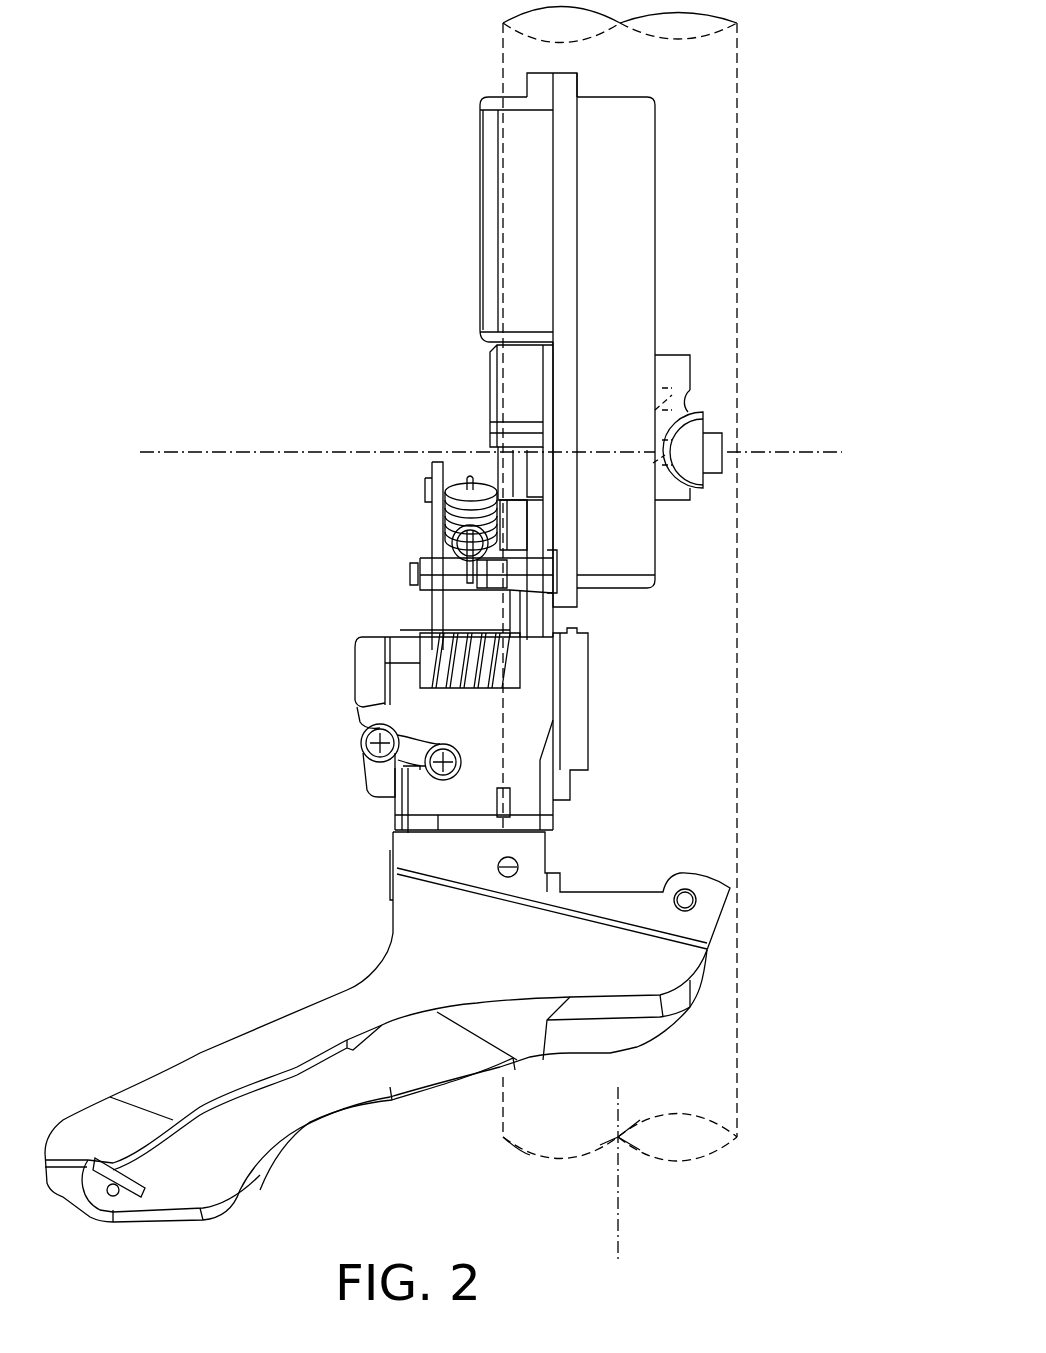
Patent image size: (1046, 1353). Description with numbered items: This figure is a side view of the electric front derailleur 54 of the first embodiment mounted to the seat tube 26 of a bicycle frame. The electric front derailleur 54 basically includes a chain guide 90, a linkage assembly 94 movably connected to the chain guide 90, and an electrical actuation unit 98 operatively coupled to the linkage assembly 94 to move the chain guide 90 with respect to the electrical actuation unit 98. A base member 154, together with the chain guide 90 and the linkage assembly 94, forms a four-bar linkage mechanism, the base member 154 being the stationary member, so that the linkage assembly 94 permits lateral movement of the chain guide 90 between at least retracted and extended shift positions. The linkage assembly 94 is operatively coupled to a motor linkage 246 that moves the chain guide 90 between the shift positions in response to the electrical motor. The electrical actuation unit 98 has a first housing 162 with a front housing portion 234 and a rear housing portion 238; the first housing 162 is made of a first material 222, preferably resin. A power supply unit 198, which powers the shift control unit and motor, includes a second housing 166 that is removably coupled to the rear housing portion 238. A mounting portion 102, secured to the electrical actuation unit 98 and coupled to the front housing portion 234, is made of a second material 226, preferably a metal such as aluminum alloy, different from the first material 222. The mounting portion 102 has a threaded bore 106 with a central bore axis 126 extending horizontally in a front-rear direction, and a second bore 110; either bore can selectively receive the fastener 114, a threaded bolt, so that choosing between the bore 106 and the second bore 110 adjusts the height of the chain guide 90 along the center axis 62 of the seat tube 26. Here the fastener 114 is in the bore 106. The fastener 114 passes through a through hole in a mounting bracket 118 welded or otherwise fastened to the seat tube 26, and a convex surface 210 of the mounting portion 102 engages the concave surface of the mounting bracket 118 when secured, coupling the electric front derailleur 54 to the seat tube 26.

The seat tube 26 is at (742, 120).
The electric front derailleur 54 is at (160, 273).
The center axis 62 is at (620, 1160).
The chain guide 90 is at (417, 923).
The linkage assembly 94 is at (272, 733).
The electrical actuation unit 98 is at (400, 162).
The mounting portion 102 is at (668, 370).
The bore 106 is at (653, 463).
The second bore 110 is at (655, 410).
The fastener 114 is at (725, 463).
The mounting bracket 118 is at (707, 427).
The central bore axis 126 is at (283, 450).
The base member 154 is at (588, 688).
The first housing 162 is at (603, 93).
The second housing 166 is at (490, 297).
The power supply unit 198 is at (490, 218).
The convex surface 210 is at (693, 493).
The first material 222 is at (657, 278).
The second material 226 is at (670, 354).
The front housing portion 234 is at (657, 182).
The rear housing portion 238 is at (565, 233).
The motor linkage 246 is at (362, 550).